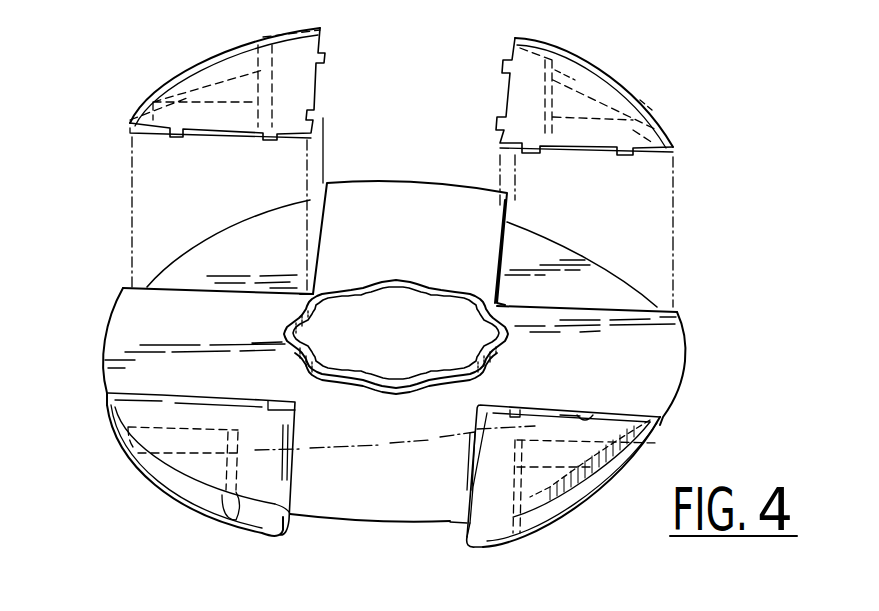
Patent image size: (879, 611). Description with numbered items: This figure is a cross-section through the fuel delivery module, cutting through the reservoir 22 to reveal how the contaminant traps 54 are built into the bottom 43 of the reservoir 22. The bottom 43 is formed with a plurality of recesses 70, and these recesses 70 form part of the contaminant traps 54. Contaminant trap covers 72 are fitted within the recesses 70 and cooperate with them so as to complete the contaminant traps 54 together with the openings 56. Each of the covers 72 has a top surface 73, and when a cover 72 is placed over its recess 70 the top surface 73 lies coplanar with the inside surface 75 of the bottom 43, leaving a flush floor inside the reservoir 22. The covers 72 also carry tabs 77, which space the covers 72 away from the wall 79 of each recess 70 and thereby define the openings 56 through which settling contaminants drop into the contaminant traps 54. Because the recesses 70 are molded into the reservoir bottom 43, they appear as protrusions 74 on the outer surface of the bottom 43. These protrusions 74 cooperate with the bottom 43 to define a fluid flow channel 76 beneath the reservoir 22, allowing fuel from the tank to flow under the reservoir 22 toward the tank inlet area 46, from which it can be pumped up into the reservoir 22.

The reservoir 22 is at (107, 317).
The bottom 43 is at (355, 493).
The tank inlet area 46 is at (410, 345).
The contaminant traps 54 is at (485, 530).
The openings 56 is at (567, 410).
The recesses 70 is at (203, 253).
The contaminant trap covers 72 is at (620, 83).
The top surface 73 is at (570, 70).
The protrusions 74 is at (172, 500).
The inside surface 75 is at (393, 200).
The fluid flow channel 76 is at (313, 530).
The tabs 77 is at (325, 56).
The wall 79 is at (140, 287).